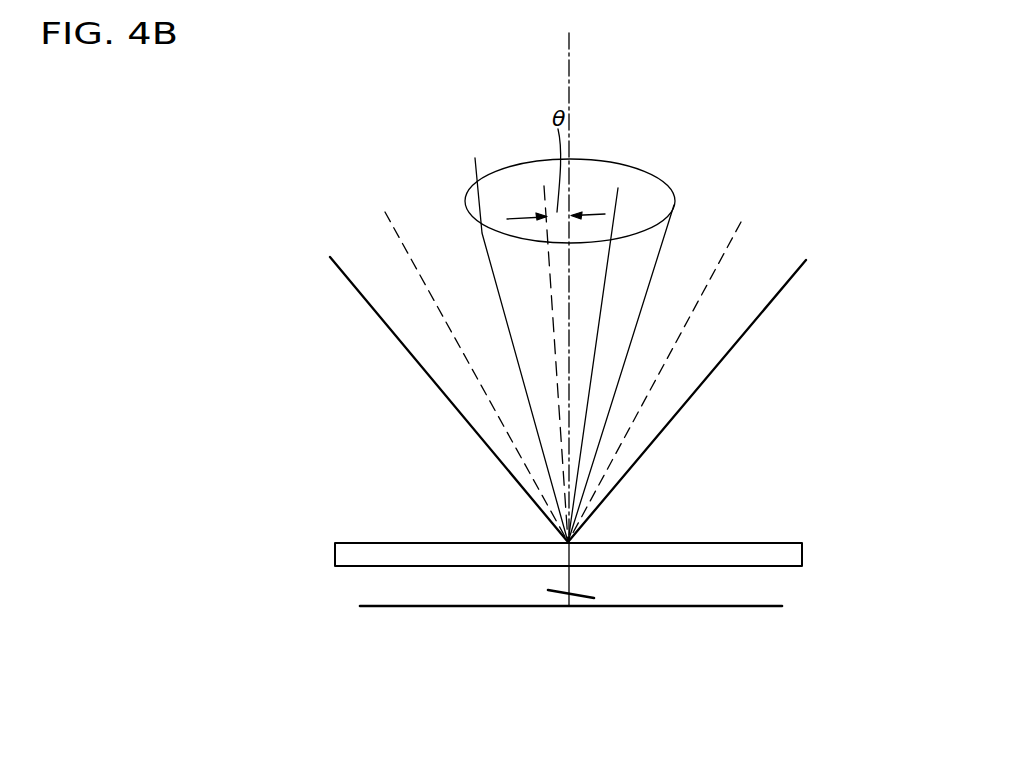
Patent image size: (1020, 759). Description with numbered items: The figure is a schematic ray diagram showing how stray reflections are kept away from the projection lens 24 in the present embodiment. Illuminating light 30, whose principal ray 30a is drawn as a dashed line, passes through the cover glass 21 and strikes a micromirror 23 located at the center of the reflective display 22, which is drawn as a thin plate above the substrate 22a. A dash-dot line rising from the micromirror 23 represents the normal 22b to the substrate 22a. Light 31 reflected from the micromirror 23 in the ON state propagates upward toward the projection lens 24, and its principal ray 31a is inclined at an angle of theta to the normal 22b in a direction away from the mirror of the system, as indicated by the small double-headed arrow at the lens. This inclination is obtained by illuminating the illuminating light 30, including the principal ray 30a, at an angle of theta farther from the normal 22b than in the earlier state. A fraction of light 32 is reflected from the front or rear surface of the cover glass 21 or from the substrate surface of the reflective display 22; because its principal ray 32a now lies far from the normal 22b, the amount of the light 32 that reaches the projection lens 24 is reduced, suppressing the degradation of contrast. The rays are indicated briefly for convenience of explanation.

The cover glass 21 is at (757, 543).
The reflective display 22 is at (614, 572).
The substrate 22a is at (740, 607).
The normal 22b is at (569, 103).
The micromirror 23 is at (556, 591).
The projection lens 24 is at (655, 174).
The illuminating light 30 is at (748, 328).
The principal ray of illuminating light 30a is at (711, 277).
The reflected light 31 is at (470, 207).
The principal ray of reflected light 31a is at (543, 190).
The reflected light from cover glass or substrate surface 32 is at (378, 308).
The principal ray of surface-reflected light 32a is at (465, 362).